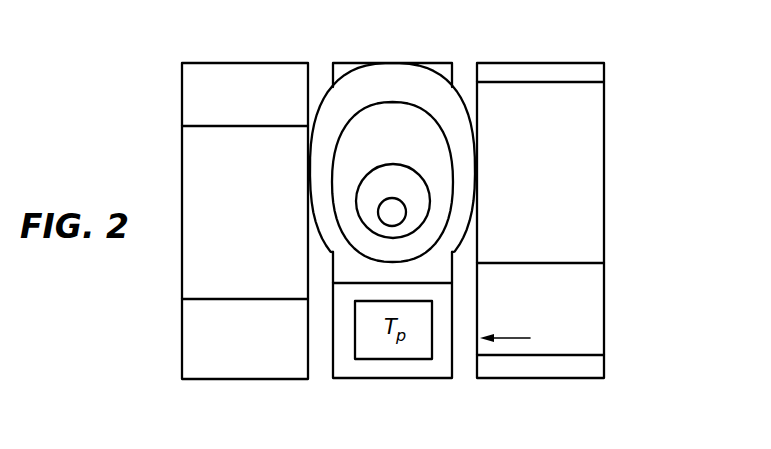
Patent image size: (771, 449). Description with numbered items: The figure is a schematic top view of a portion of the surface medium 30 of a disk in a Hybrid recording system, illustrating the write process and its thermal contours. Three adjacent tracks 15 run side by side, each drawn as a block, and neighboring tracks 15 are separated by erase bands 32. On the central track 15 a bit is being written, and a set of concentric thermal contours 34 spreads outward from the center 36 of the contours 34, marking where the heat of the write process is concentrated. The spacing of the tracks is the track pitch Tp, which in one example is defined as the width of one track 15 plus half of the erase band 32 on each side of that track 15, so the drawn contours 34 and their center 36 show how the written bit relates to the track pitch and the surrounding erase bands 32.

The track 15 is at (210, 380).
The surface medium 30 is at (630, 106).
The erase band 32 is at (320, 71).
The thermal contours 34 is at (463, 240).
The center 36 is at (392, 213).